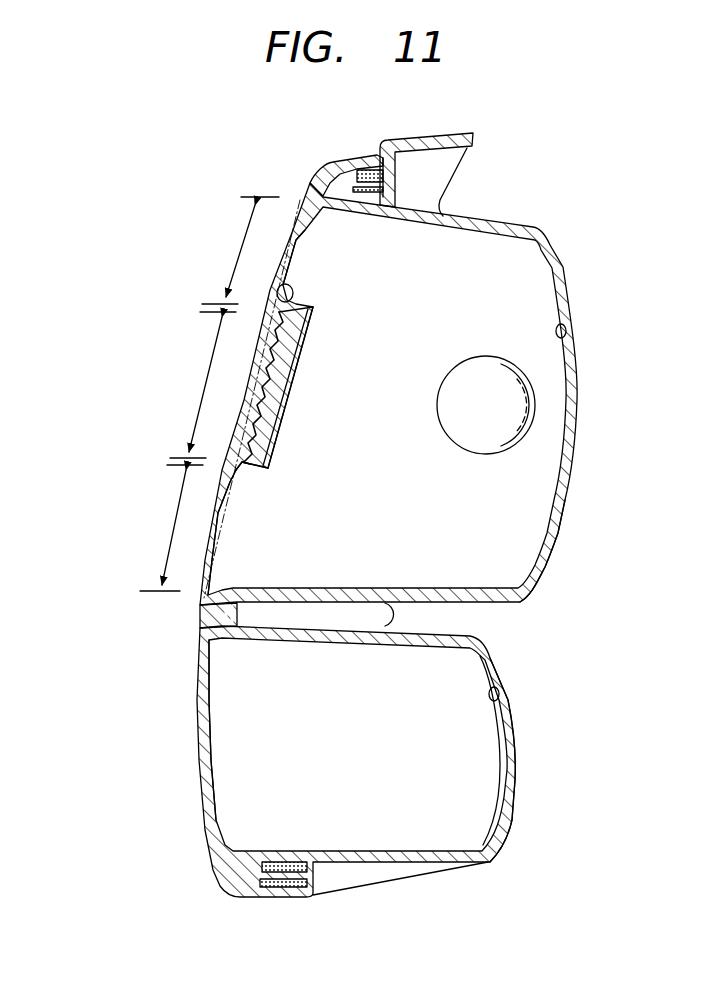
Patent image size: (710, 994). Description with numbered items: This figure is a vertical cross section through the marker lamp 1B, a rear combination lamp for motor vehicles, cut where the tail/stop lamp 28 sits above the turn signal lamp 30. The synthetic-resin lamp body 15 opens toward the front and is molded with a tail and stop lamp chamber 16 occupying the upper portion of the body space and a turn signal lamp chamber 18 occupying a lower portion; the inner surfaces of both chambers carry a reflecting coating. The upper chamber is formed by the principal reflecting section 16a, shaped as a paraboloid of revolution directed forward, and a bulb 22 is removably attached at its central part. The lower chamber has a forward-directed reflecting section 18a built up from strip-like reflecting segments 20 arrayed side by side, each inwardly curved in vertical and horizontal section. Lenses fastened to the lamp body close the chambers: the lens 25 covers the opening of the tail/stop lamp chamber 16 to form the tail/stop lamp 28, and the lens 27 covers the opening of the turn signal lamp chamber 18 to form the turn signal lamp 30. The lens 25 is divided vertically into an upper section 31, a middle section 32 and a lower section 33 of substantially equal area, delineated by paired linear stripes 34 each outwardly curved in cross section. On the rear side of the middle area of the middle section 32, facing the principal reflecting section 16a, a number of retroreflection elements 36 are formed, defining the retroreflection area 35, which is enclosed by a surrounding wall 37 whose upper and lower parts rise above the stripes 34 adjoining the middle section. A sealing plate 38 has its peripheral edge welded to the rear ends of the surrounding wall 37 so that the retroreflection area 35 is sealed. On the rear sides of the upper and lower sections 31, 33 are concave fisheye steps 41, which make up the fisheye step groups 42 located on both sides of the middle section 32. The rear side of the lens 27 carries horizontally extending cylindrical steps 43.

The marker lamp 1B is at (550, 142).
The lamp body 15 is at (579, 455).
The tail and stop lamp chamber 16 is at (564, 532).
The principal reflecting section 16a is at (575, 335).
The turn signal lamp chamber 18 is at (518, 750).
The reflecting section 18a is at (498, 698).
The reflecting segments 20 is at (498, 770).
The bulb 22 is at (537, 405).
The lens 25 is at (318, 186).
The lens 27 is at (198, 758).
The tail/stop lamp 28 is at (498, 306).
The turn signal lamp 30 is at (418, 738).
The upper section 31 is at (240, 246).
The middle section 32 is at (205, 360).
The lower section 33 is at (176, 505).
The linear stripes 34 is at (270, 291).
The retroreflection area 35 is at (375, 340).
The retroreflection elements 36 is at (278, 345).
The surrounding wall 37 is at (290, 300).
The sealing plate 38 is at (285, 425).
The concave fisheye steps 41 is at (311, 213).
The fisheye step groups 42 is at (385, 218).
The cylindrical steps 43 is at (210, 680).